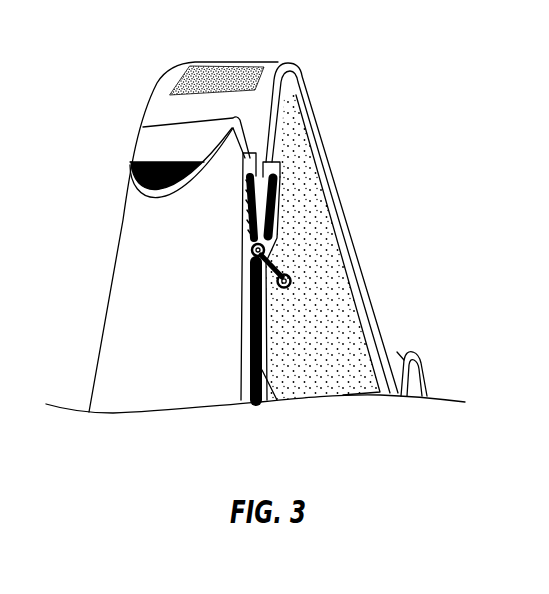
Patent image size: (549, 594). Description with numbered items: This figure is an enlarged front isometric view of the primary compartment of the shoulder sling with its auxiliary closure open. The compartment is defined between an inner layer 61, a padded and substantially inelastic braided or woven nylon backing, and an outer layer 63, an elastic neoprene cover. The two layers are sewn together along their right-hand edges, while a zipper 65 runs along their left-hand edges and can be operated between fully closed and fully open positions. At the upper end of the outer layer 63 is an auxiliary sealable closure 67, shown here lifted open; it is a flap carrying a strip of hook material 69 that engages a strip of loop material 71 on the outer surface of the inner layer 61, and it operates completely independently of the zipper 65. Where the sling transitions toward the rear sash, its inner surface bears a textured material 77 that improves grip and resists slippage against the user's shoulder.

The inner layer 61 is at (248, 110).
The outer layer 63 is at (130, 279).
The zipper 65 is at (277, 269).
The auxiliary sealable closure 67 is at (150, 150).
The strip of hook material 69 is at (132, 163).
The strip of loop material 71 is at (197, 80).
The textured material 77 is at (313, 322).